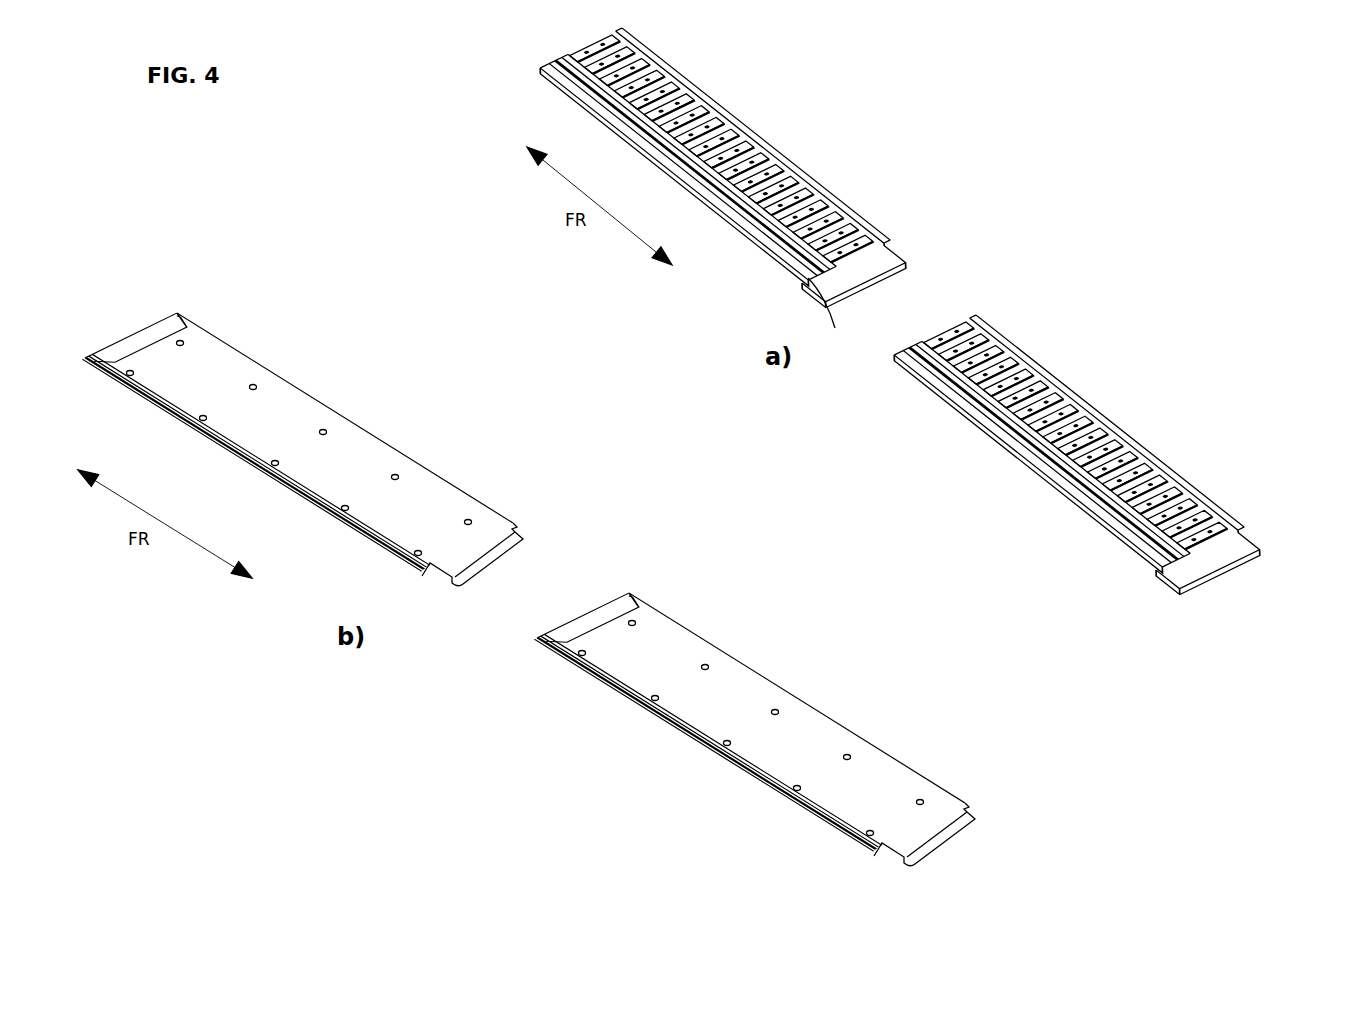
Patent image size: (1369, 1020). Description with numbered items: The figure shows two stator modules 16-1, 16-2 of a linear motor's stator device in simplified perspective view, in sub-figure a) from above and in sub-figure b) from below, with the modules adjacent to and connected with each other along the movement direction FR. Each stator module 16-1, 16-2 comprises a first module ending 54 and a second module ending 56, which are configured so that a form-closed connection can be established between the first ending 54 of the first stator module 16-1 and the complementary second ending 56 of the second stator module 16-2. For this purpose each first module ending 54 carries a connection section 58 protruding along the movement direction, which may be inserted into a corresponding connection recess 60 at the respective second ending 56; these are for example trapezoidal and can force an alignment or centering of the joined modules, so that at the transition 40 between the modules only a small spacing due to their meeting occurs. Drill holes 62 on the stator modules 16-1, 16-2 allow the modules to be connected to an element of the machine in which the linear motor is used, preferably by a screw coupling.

The first stator module 16-1 is at (763, 131).
The second stator module 16-2 is at (1128, 435).
The joint between panel members 40 is at (907, 365).
The first module ending 54 is at (879, 542).
The second module ending 56 is at (582, 45).
The connection section 58 is at (880, 268).
The connection recess 60 is at (137, 345).
The drill holes 62 is at (395, 475).